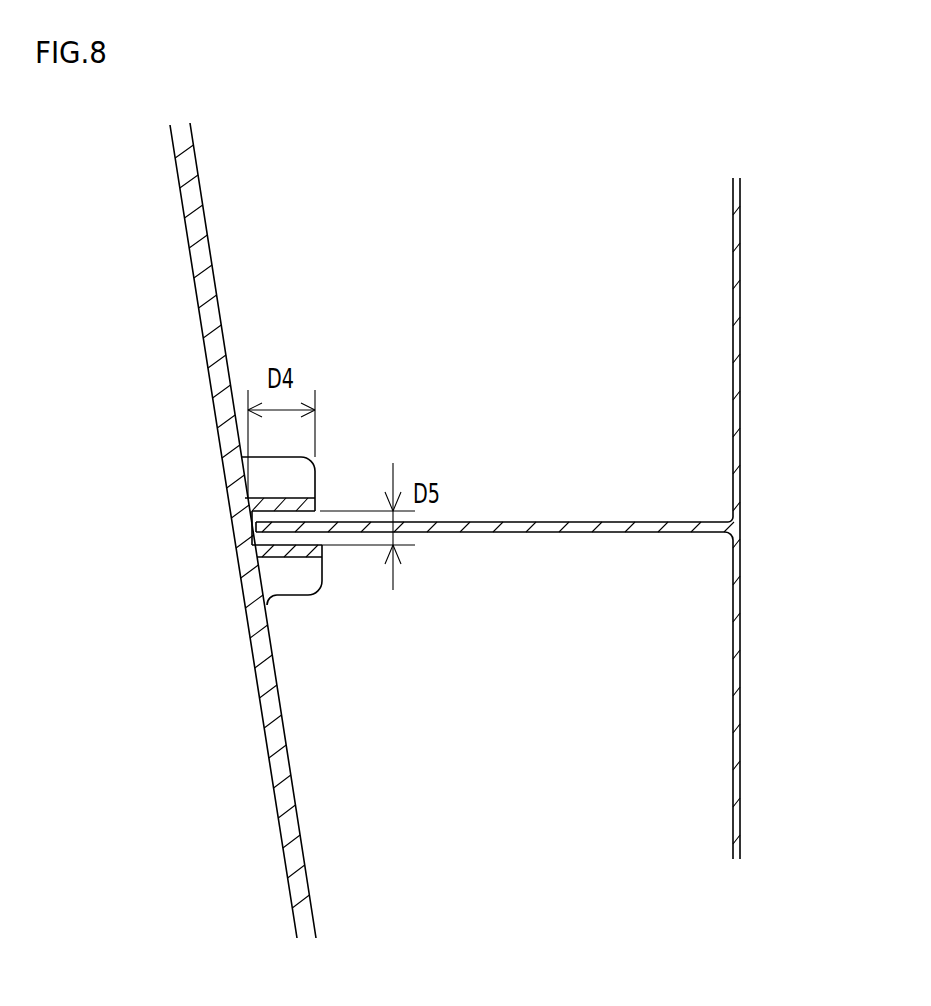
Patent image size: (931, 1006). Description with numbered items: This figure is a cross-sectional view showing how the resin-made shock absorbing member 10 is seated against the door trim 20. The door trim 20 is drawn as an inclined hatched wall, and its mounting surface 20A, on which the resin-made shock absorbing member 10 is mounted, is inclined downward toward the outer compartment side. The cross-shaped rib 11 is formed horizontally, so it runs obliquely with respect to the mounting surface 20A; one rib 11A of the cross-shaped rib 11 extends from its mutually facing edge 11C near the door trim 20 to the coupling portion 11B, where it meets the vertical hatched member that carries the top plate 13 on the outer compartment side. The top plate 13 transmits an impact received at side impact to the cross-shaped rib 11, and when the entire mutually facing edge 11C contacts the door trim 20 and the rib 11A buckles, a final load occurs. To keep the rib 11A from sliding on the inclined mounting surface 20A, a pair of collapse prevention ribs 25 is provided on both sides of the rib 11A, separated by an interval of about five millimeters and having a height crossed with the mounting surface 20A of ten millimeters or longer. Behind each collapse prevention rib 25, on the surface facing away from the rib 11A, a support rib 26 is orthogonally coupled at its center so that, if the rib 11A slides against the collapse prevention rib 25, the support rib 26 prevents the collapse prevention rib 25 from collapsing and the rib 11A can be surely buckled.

The resin-made shock absorbing member 10 is at (741, 305).
The cross-shaped rib 11 is at (697, 519).
The rib 11A is at (563, 524).
The coupling portion 11B is at (737, 527).
The mutually facing edge 11C is at (257, 527).
The top plate 13 is at (741, 626).
The door trim 20 is at (197, 131).
The mounting surface 20A is at (284, 733).
The collapse prevention rib 25 is at (270, 502).
The support rib 26 is at (273, 472).